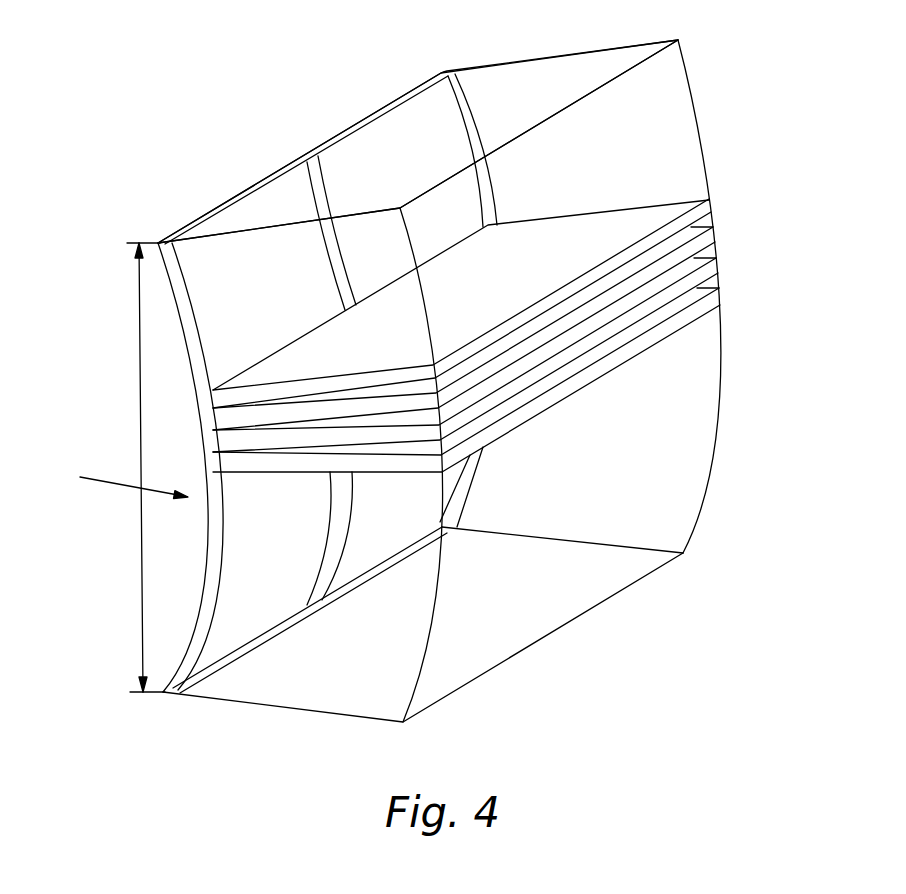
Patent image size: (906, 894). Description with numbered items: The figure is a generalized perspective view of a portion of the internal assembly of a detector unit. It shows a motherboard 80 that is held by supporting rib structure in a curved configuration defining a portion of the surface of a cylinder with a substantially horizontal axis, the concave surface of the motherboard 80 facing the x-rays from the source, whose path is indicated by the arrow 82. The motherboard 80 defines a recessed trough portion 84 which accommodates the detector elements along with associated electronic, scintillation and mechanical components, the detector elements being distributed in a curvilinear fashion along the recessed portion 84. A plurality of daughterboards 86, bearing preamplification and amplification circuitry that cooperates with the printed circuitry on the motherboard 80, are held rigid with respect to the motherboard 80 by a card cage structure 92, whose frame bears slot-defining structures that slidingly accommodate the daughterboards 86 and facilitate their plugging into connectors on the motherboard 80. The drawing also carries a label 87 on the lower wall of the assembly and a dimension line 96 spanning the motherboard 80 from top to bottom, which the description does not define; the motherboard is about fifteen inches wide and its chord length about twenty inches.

The motherboard 80 is at (198, 607).
The arrow indicating x-ray path 82 is at (123, 483).
The recessed trough portion 84 is at (327, 543).
The daughterboards 86 is at (653, 313).
The bottom wall 87 is at (568, 625).
The card cage structure 92 is at (545, 68).
The height dimension 96 is at (141, 573).